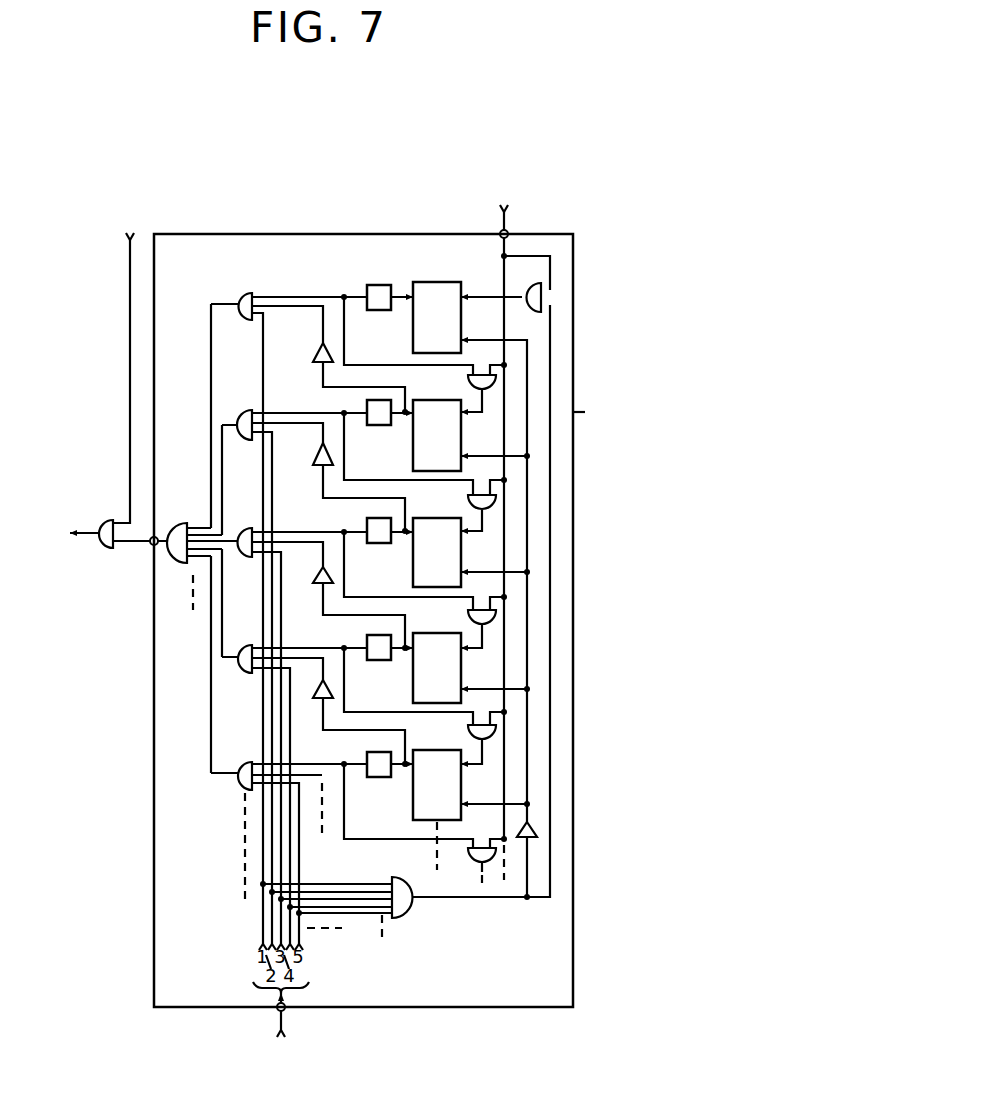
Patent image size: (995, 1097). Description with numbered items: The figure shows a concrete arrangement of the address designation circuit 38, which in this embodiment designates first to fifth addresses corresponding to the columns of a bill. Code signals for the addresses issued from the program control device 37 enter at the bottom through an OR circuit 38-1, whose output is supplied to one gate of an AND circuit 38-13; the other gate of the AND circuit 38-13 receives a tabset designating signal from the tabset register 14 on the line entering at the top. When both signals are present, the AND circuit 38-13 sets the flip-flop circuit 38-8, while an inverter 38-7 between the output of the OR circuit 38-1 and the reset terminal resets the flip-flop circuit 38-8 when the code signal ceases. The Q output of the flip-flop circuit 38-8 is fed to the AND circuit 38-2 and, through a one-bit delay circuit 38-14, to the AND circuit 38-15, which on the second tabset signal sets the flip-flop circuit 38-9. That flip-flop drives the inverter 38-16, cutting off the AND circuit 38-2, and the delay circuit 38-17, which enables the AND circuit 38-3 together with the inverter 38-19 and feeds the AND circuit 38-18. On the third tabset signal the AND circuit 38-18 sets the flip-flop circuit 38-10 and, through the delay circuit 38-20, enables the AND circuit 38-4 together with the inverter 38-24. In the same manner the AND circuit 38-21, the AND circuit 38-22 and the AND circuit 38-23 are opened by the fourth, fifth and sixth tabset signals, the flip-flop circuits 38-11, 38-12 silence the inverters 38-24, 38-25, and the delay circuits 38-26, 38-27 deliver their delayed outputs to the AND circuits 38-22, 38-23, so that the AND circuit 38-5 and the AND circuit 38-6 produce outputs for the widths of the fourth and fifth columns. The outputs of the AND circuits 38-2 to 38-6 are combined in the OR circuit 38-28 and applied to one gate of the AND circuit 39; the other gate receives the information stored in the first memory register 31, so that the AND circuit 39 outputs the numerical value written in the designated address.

The address designation circuit 38 is at (429, 620).
The OR circuit 38-1 is at (400, 918).
The AND circuit 38-2 is at (243, 293).
The AND circuit 38-3 is at (243, 410).
The AND circuit 38-4 is at (243, 528).
The AND circuit 38-5 is at (243, 645).
The AND circuit 38-6 is at (243, 762).
The inverter 38-7 is at (537, 832).
The flip-flop circuit 38-8 is at (445, 282).
The flip-flop circuit 38-9 is at (445, 400).
The flip-flop circuit 38-10 is at (445, 518).
The flip-flop circuit 38-11 is at (445, 633).
The flip-flop circuit 38-12 is at (445, 750).
The AND circuit 38-13 is at (545, 290).
The delay circuit 38-14 is at (382, 285).
The AND circuit 38-15 is at (495, 380).
The inverter 38-16 is at (318, 348).
The delay circuit 38-17 is at (378, 425).
The AND circuit 38-18 is at (495, 500).
The inverter 38-19 is at (318, 455).
The delay circuit 38-20 is at (378, 543).
The AND circuit 38-21 is at (495, 617).
The AND circuit 38-22 is at (495, 735).
The AND circuit 38-23 is at (488, 865).
The inverter 38-24 is at (335, 578).
The inverter 38-25 is at (335, 692).
The delay circuit 38-26 is at (378, 660).
The delay circuit 38-27 is at (378, 777).
The OR circuit 38-28 is at (178, 523).
The AND circuit 39 is at (106, 521).
The first memory register 31 is at (225, 215).
The tabset register 14 is at (599, 187).
The program control device 37 is at (454, 1053).